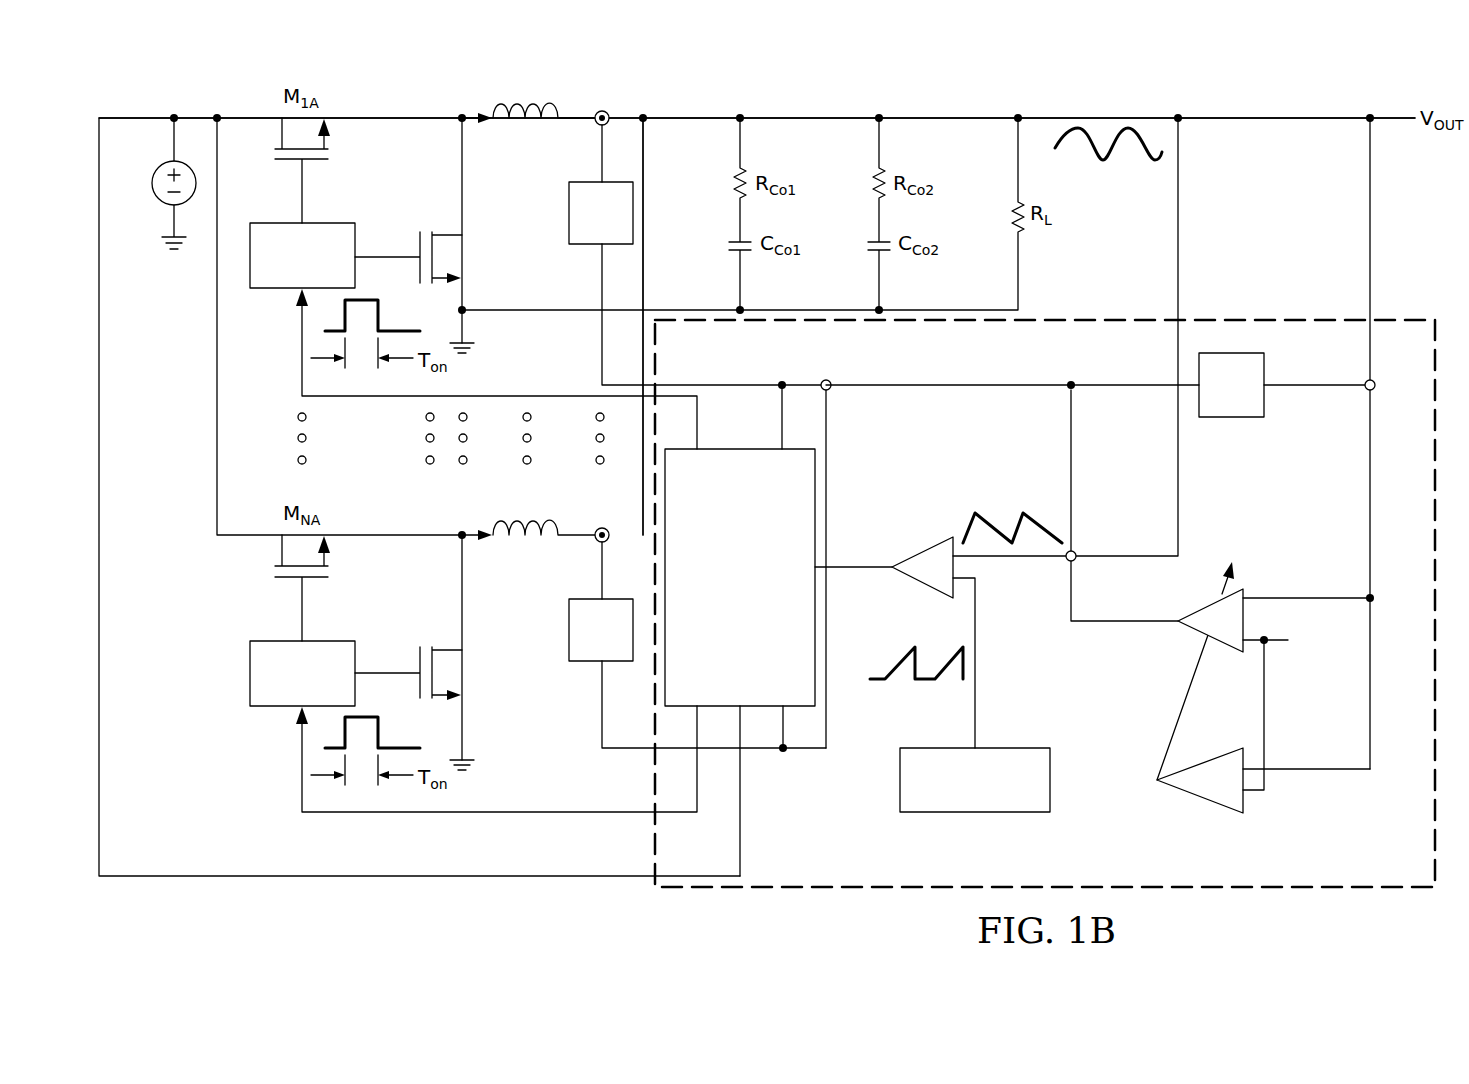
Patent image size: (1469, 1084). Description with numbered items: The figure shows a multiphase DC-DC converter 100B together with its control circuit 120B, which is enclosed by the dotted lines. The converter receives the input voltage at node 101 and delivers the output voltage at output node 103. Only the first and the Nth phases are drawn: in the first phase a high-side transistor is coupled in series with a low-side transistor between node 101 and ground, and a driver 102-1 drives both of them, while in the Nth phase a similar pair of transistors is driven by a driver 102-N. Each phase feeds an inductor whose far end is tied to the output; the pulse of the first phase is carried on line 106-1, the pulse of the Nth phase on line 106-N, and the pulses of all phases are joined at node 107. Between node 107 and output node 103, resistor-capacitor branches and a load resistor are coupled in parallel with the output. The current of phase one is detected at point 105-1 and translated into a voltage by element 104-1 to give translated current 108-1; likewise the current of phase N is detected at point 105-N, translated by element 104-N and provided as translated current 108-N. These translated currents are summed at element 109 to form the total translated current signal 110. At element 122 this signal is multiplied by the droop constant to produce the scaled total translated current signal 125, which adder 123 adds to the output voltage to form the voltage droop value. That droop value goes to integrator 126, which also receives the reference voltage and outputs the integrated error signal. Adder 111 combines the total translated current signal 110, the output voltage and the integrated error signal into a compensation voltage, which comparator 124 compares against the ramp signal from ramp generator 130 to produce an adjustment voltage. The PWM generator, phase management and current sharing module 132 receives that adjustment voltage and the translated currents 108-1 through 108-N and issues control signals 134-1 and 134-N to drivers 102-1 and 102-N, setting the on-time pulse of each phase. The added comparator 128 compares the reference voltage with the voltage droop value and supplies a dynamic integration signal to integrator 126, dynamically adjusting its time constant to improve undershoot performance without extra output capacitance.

The DC-DC converter 100B is at (953, 98).
The node 101 is at (172, 116).
The driver 102-1 is at (251, 222).
The driver 102-N is at (268, 708).
The output node 103 is at (1371, 116).
The element RI 104-1 is at (568, 212).
The element RI 104-N is at (568, 627).
The point 105-1 is at (595, 126).
The point 105-N is at (595, 545).
The line 106-1 is at (588, 98).
The line 106-N is at (588, 512).
The node 107 is at (645, 116).
The translated current 108-1 is at (727, 383).
The translated current 108-N is at (805, 752).
The element 109 is at (831, 381).
The total translated current signal 110 is at (955, 383).
The adder 111 is at (1065, 562).
The control circuit 120B is at (1096, 323).
The element 122 is at (1232, 420).
The adder 123 is at (1375, 393).
The comparator 124 is at (918, 588).
The scaled total translated current signal 125 is at (1296, 383).
The integrator 126 is at (1192, 630).
The comparator 128 is at (1205, 800).
The ramp generator 130 is at (985, 814).
The PWM generator, phase management and current sharing module 132 is at (720, 677).
The control signal 134-1 is at (375, 398).
The control signal 134-N is at (478, 816).